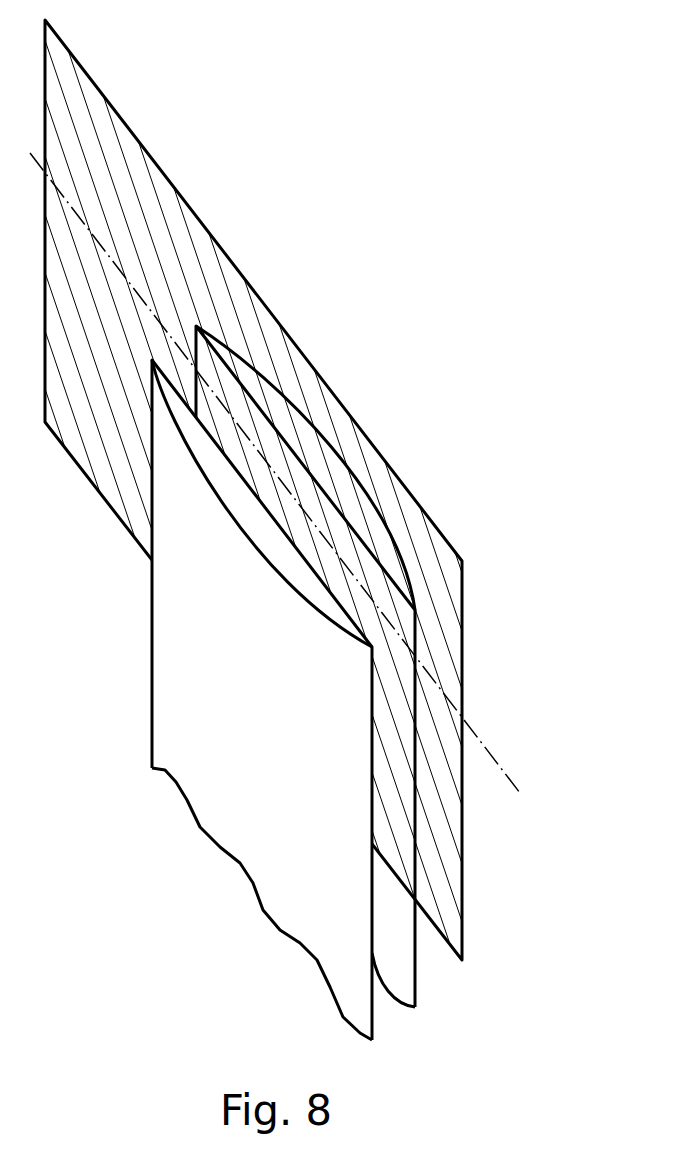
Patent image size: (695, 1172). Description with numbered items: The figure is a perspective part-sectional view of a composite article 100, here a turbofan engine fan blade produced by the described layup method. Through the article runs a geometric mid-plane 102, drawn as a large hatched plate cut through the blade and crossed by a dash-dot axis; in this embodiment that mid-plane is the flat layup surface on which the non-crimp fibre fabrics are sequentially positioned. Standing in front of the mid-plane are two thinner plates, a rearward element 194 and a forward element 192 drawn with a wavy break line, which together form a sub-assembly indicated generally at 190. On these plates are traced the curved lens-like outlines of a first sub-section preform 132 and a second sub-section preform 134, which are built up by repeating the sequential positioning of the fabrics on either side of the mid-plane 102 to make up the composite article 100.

The composite article 100 is at (347, 522).
The geometric mid-plane 102 is at (462, 633).
The lens arrangement 190 is at (253, 665).
The first lens plate 192 is at (197, 702).
The second lens plate 194 is at (340, 666).
The first sub-section preform 132 is at (235, 492).
The second sub-section preform 134 is at (313, 460).